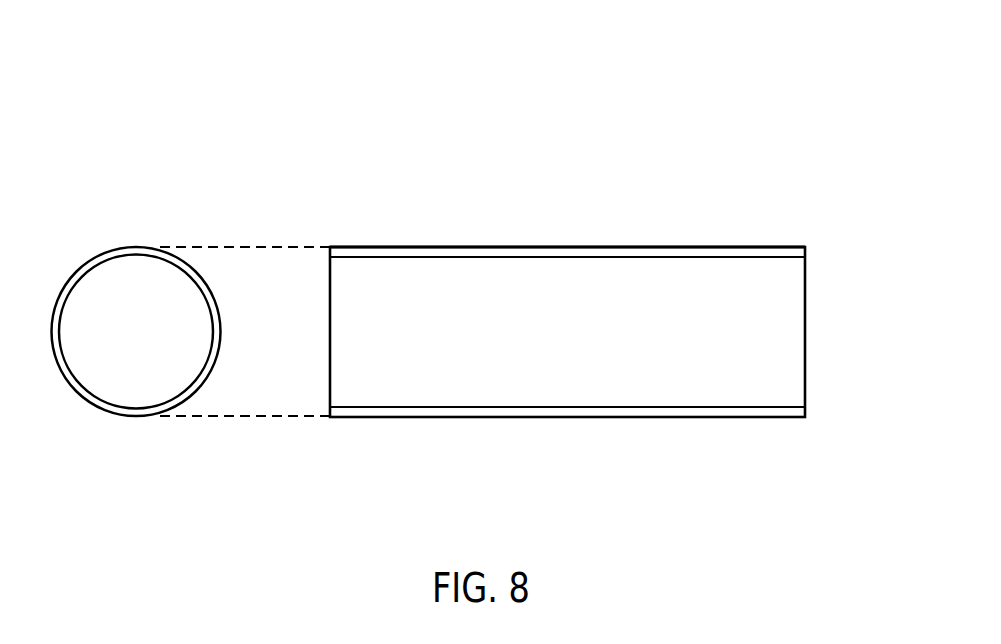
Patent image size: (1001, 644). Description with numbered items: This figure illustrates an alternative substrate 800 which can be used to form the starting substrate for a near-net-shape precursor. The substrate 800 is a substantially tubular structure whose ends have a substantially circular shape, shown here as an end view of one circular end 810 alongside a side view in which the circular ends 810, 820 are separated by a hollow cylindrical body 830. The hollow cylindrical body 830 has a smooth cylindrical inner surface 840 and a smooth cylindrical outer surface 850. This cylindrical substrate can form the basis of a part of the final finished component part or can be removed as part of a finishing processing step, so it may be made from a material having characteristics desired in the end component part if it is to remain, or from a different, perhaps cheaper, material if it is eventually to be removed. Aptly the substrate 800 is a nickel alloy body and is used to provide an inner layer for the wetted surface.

The substrate 800 is at (483, 128).
The circular end 810 is at (328, 413).
The circular end 820 is at (805, 410).
The hollow cylindrical body 830 is at (712, 253).
The cylindrical inner surface 840 is at (562, 258).
The cylindrical outer surface 850 is at (492, 247).